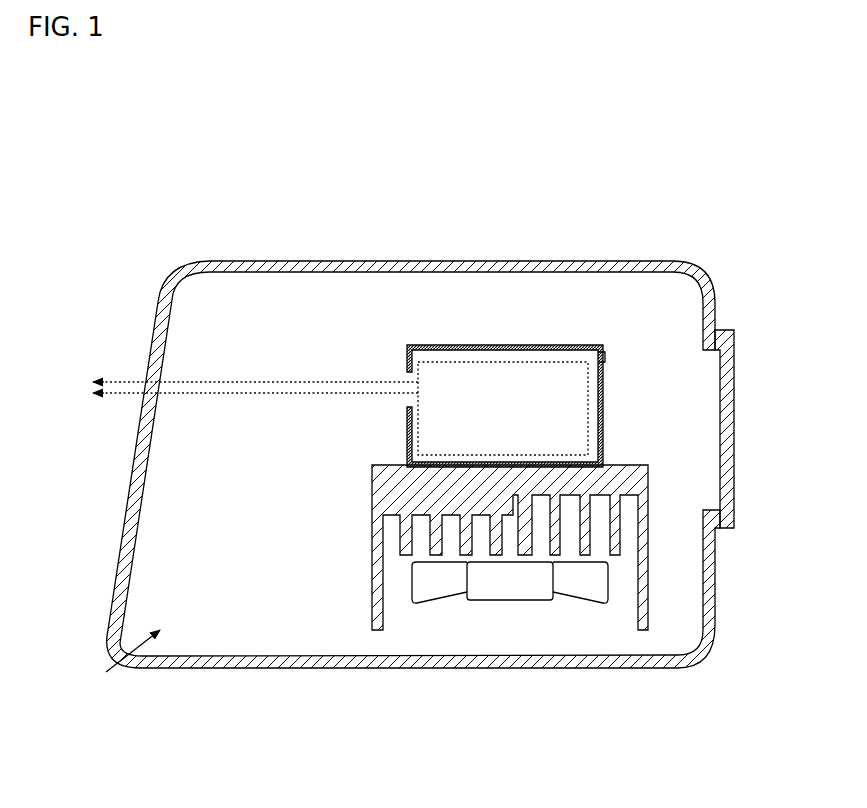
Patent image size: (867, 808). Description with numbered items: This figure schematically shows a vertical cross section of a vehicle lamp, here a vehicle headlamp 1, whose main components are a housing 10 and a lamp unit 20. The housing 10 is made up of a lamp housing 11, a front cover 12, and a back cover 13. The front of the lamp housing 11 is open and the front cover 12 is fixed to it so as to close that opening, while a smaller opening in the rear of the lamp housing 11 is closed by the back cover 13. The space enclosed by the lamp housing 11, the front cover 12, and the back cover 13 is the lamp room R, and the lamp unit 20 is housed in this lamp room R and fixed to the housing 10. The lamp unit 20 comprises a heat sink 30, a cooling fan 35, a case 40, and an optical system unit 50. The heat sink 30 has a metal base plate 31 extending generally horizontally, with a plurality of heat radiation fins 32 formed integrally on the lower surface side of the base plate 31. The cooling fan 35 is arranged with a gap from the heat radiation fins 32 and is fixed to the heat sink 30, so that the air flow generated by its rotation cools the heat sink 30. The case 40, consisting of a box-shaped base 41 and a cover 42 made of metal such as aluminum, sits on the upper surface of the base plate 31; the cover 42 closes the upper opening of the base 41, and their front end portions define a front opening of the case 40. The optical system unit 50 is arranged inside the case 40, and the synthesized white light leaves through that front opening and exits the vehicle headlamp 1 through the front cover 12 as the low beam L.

The vehicle headlamp 1 is at (152, 128).
The housing 10 is at (250, 133).
The lamp housing 11 is at (368, 260).
The front cover 12 is at (252, 259).
The back cover 13 is at (735, 350).
The lamp unit 20 is at (370, 352).
The heat sink 30 is at (370, 505).
The base plate 31 is at (370, 473).
The heat radiation fins 32 is at (617, 537).
The cooling fan 35 is at (520, 590).
The case 40 is at (563, 220).
The base 41 is at (605, 392).
The cover 42 is at (553, 343).
The optical system unit 50 is at (453, 352).
The low beam L is at (245, 390).
The lamp room R is at (125, 665).